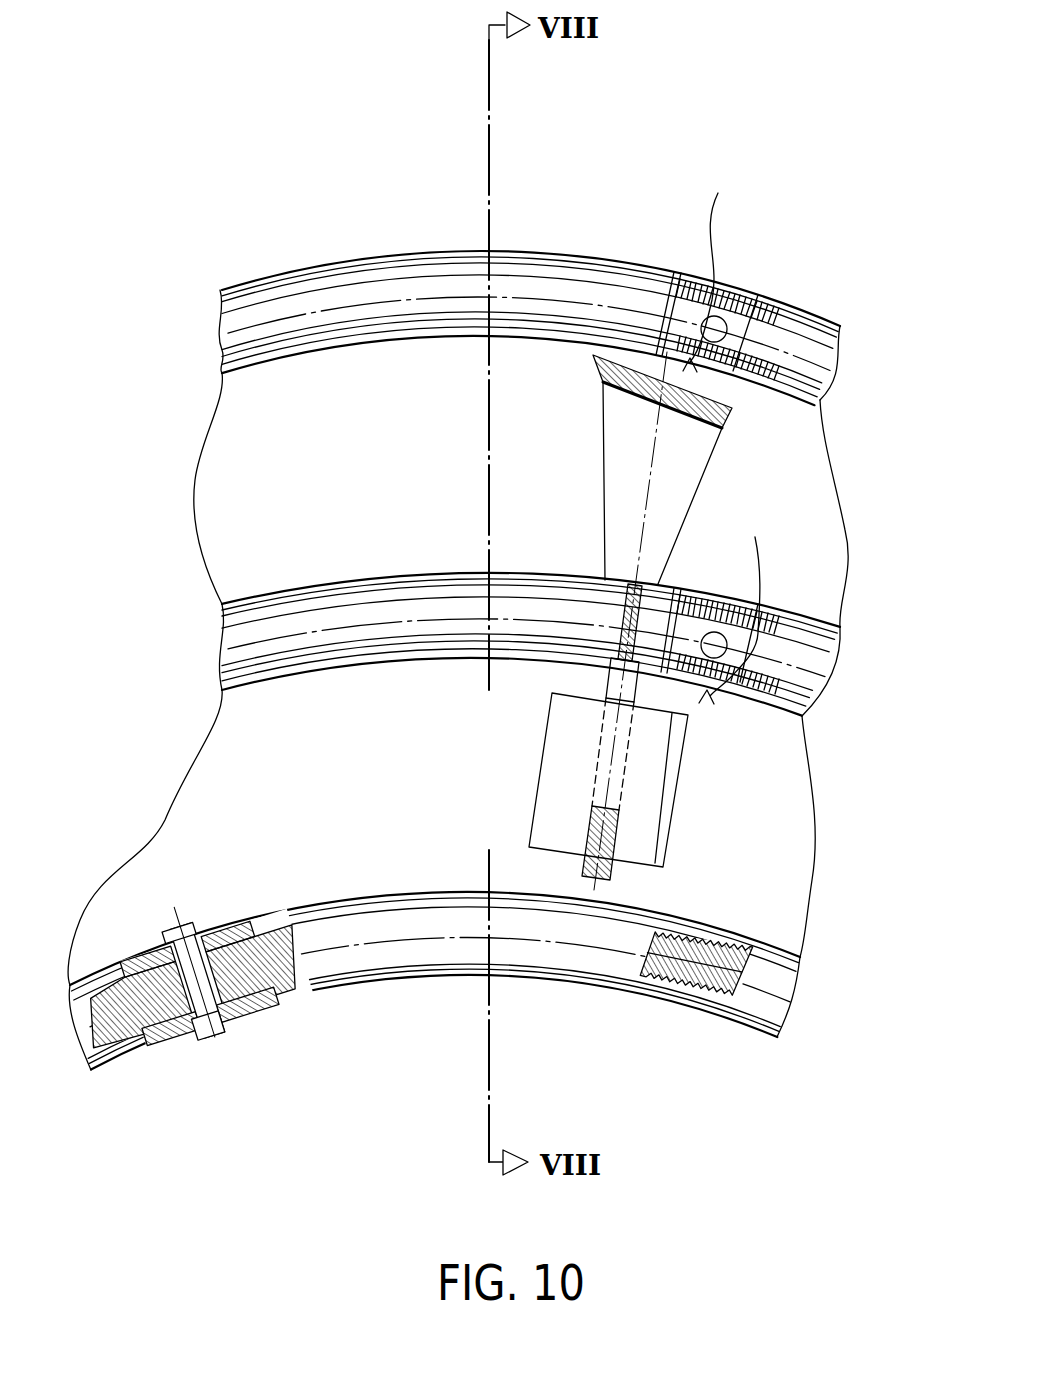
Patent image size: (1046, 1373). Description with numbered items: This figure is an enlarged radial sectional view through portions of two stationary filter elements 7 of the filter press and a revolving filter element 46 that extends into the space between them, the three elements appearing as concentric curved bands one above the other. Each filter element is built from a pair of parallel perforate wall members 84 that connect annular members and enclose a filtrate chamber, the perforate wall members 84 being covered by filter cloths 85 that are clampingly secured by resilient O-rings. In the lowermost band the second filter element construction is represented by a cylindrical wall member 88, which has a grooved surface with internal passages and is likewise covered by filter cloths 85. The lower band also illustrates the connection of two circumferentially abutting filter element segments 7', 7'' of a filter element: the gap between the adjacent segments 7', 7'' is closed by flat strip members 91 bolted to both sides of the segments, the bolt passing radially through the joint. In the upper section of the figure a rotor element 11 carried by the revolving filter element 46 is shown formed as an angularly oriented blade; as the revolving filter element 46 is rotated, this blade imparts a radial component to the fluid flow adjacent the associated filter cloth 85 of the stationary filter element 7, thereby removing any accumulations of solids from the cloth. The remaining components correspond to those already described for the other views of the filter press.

The stationary filter element 7 is at (529, 353).
The rotatable filter element 46 is at (452, 563).
The filter element segment 7' is at (434, 892).
The filter element segment 7'' is at (187, 903).
The rotor element 11 is at (740, 413).
The perforate wall member 84 is at (742, 340).
The filter cloth 85 is at (708, 270).
The cylindrical wall member 88 is at (672, 988).
The flat strip member 91 is at (140, 966).